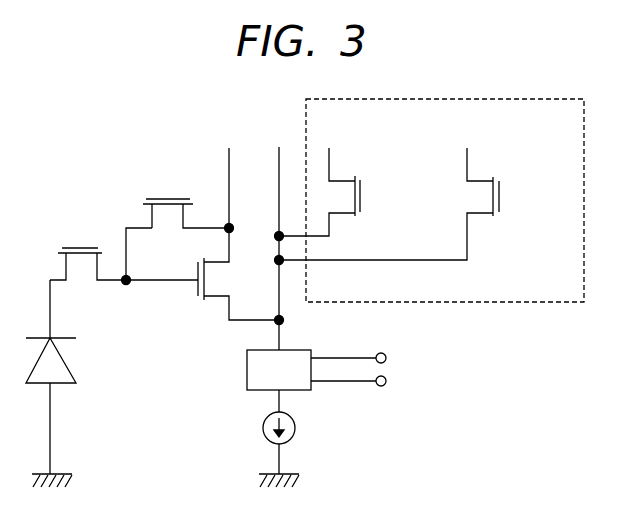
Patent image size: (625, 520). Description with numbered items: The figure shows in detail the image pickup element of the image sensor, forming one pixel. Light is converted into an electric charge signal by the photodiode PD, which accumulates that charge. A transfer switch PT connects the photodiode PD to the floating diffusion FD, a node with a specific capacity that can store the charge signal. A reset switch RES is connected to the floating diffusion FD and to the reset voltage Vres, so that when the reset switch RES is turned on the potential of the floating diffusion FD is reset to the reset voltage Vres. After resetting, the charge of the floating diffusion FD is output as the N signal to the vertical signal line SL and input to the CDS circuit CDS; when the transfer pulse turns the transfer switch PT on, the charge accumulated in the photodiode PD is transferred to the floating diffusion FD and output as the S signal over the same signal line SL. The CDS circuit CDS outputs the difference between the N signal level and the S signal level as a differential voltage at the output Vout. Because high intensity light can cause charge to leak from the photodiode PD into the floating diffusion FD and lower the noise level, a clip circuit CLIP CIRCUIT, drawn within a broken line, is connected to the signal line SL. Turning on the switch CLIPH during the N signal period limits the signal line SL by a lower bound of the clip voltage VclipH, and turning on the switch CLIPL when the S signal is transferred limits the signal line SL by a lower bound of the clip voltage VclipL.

The photodiode PD is at (42, 383).
The transfer switch PT is at (82, 247).
The floating diffusion FD is at (157, 272).
The reset switch RES is at (168, 198).
The reset voltage Vres is at (227, 194).
The vertical signal line SL is at (279, 237).
The clip circuit CLIP CIRCUIT is at (445, 200).
The high clip voltage VclipH is at (345, 152).
The high clip switch CLIPH is at (391, 197).
The low clip voltage VclipL is at (474, 152).
The low clip switch CLIPL is at (499, 197).
The CDS circuit CDS is at (279, 381).
The output Vout is at (375, 369).